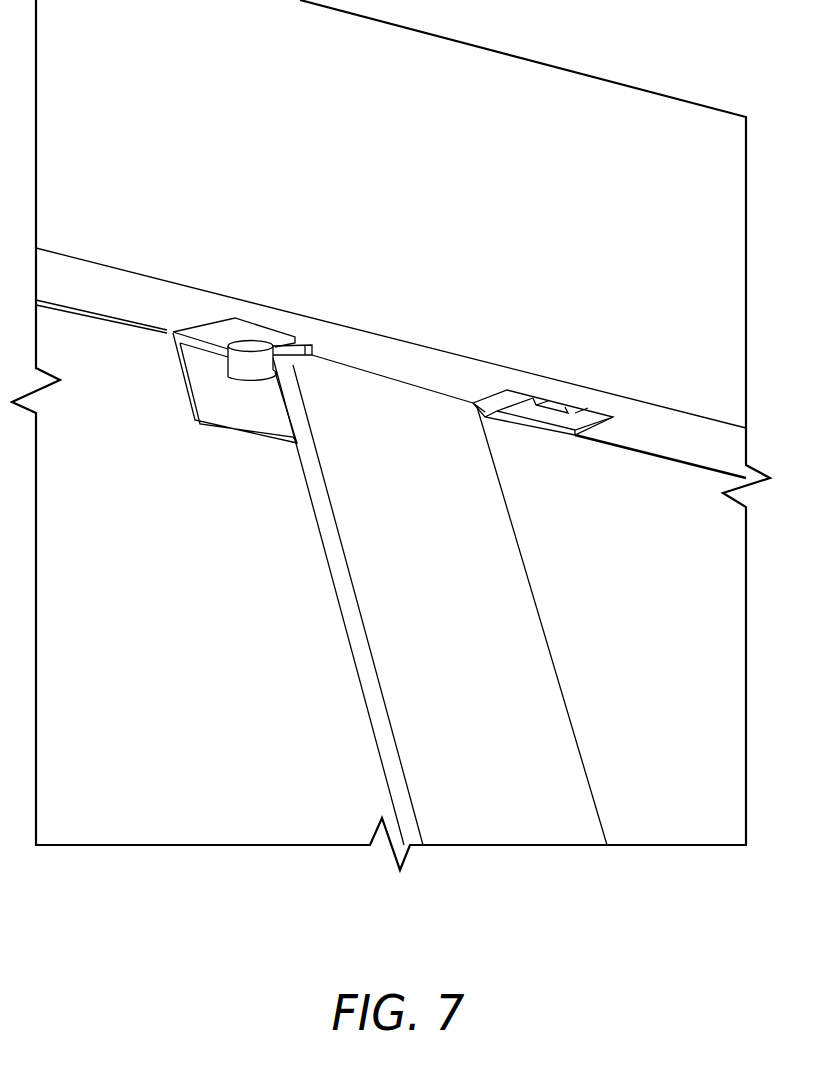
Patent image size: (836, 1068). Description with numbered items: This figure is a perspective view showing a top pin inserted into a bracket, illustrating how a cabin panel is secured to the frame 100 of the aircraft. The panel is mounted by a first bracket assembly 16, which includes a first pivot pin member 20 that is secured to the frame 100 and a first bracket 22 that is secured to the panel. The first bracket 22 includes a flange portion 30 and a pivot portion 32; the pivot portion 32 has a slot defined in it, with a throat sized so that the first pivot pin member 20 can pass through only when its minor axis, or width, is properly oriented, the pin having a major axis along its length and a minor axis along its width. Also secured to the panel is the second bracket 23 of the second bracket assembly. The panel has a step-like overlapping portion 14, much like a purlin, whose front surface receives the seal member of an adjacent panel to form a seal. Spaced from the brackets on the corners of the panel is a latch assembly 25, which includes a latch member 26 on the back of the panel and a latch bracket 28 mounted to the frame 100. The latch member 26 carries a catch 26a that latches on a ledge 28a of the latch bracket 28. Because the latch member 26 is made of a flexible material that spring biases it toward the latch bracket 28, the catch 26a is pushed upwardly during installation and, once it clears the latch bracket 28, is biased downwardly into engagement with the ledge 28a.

The frame 100 is at (430, 172).
The first bracket assembly 16 is at (268, 292).
The overlapping portion 14 is at (462, 625).
The second bracket 23 is at (183, 668).
The first bracket 22 is at (203, 380).
The pivot portion 32 is at (215, 338).
The flange portion 30 is at (212, 408).
The first pivot pin member 20 is at (249, 373).
The latch assembly 25 is at (553, 412).
The latch bracket 28 is at (495, 398).
The latch member 26 is at (522, 421).
The catch 26a is at (548, 400).
The ledge 28a is at (585, 407).